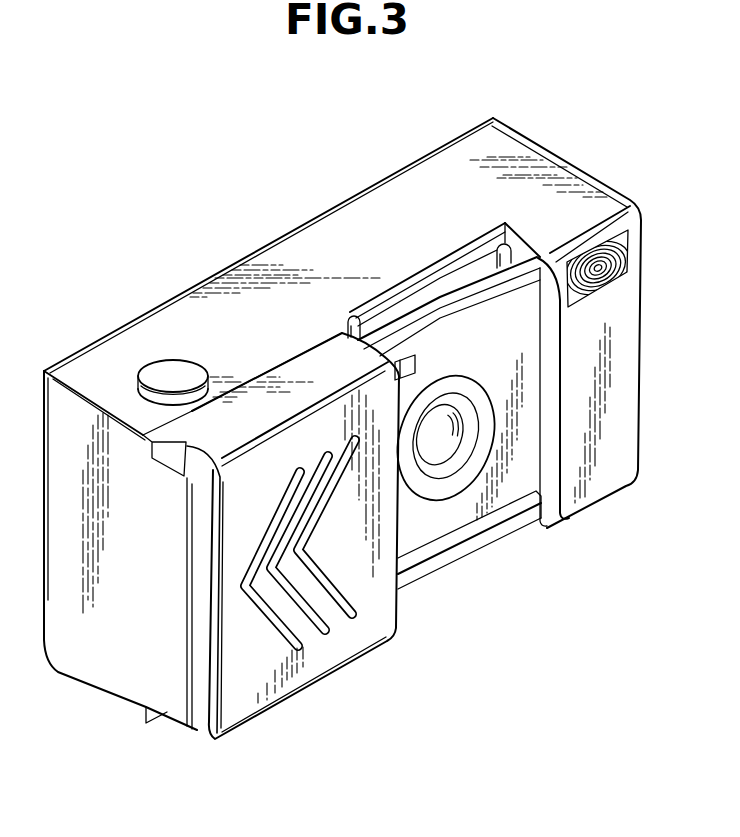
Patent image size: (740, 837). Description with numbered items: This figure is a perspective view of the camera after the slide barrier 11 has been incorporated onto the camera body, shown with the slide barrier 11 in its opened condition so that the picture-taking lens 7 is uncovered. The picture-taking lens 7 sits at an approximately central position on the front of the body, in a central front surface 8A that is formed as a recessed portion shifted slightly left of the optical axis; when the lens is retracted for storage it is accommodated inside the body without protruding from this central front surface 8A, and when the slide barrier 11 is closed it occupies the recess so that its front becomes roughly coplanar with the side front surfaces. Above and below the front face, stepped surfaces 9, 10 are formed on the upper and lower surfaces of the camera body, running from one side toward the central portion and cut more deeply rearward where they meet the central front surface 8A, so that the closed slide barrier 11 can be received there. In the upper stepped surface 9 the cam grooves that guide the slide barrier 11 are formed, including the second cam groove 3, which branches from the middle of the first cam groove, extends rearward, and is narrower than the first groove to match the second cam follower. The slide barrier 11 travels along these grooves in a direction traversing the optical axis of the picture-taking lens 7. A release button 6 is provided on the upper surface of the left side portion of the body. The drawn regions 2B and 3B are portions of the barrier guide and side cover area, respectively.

The guide groove (rail) for the lens barrier 2B is at (440, 297).
The second cam groove 3 is at (351, 312).
The finder/flash side cover portion 3B is at (612, 449).
The release button 6 is at (172, 377).
The picture-taking lens 7 is at (443, 450).
The central front surface 8A is at (505, 470).
The stepped surface 9 is at (171, 455).
The stepped surface 10 is at (177, 723).
The slide barrier 11 is at (353, 640).